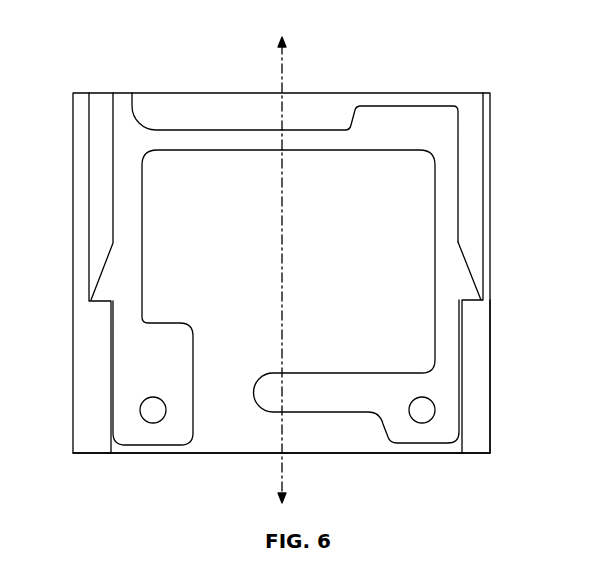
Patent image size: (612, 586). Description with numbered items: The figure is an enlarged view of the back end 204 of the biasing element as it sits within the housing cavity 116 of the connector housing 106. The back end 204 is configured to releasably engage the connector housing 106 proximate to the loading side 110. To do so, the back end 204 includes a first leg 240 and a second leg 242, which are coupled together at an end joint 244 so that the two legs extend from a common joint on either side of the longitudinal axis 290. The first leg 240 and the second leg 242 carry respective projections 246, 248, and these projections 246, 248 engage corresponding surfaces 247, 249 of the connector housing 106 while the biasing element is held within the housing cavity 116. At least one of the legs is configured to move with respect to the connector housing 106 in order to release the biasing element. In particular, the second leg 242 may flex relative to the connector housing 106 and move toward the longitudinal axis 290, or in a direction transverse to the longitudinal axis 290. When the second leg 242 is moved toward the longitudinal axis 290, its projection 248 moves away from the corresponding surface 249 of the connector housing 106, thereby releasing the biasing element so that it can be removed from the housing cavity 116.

The back end 204 is at (495, 50).
The longitudinal axis 290 is at (284, 68).
The end joint 244 is at (152, 100).
The first leg 240 is at (143, 262).
The second leg 242 is at (434, 262).
The housing cavity 116 is at (228, 300).
The projection 246 is at (100, 278).
The corresponding surface 247 is at (99, 305).
The projection 248 is at (475, 278).
The corresponding surface 249 is at (472, 304).
The loading side 110 is at (399, 480).
The connector housing 106 is at (489, 430).